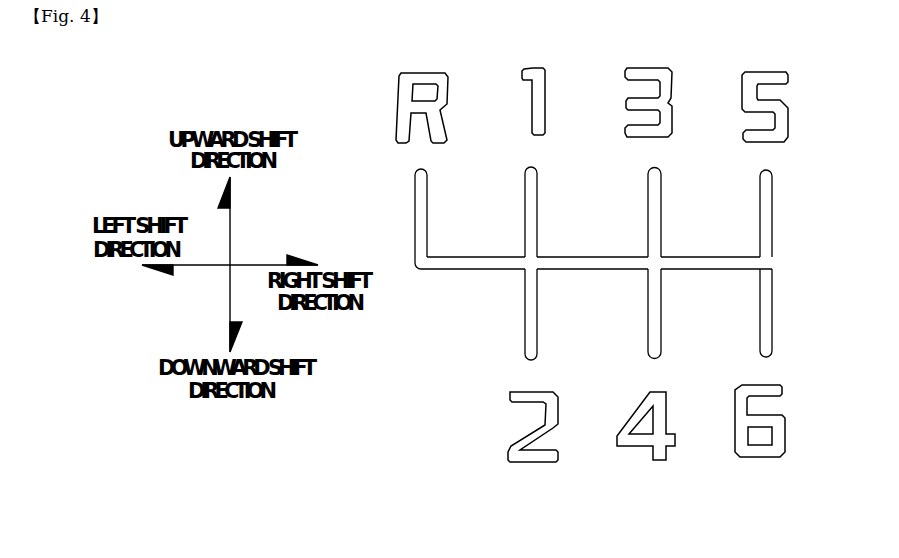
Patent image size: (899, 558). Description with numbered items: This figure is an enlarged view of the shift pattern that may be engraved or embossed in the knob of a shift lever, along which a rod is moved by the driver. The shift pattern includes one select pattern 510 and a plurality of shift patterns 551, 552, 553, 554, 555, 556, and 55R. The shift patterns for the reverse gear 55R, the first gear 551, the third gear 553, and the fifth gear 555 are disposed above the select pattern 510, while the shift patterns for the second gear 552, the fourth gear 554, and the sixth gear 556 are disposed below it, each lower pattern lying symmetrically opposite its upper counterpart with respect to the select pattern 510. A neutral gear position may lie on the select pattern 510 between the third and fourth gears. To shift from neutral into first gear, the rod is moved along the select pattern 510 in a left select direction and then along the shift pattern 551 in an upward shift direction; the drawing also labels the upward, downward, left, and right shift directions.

The select pattern 510 is at (469, 269).
The shift pattern corresponding to the reverse gear 55R is at (427, 212).
The shift pattern corresponding to the first gear 551 is at (537, 208).
The shift pattern corresponding to the second gear 552 is at (537, 312).
The shift pattern corresponding to the third gear 553 is at (661, 209).
The shift pattern corresponding to the fourth gear 554 is at (661, 314).
The shift pattern corresponding to the fifth gear 555 is at (772, 209).
The shift pattern corresponding to the sixth gear 556 is at (772, 314).